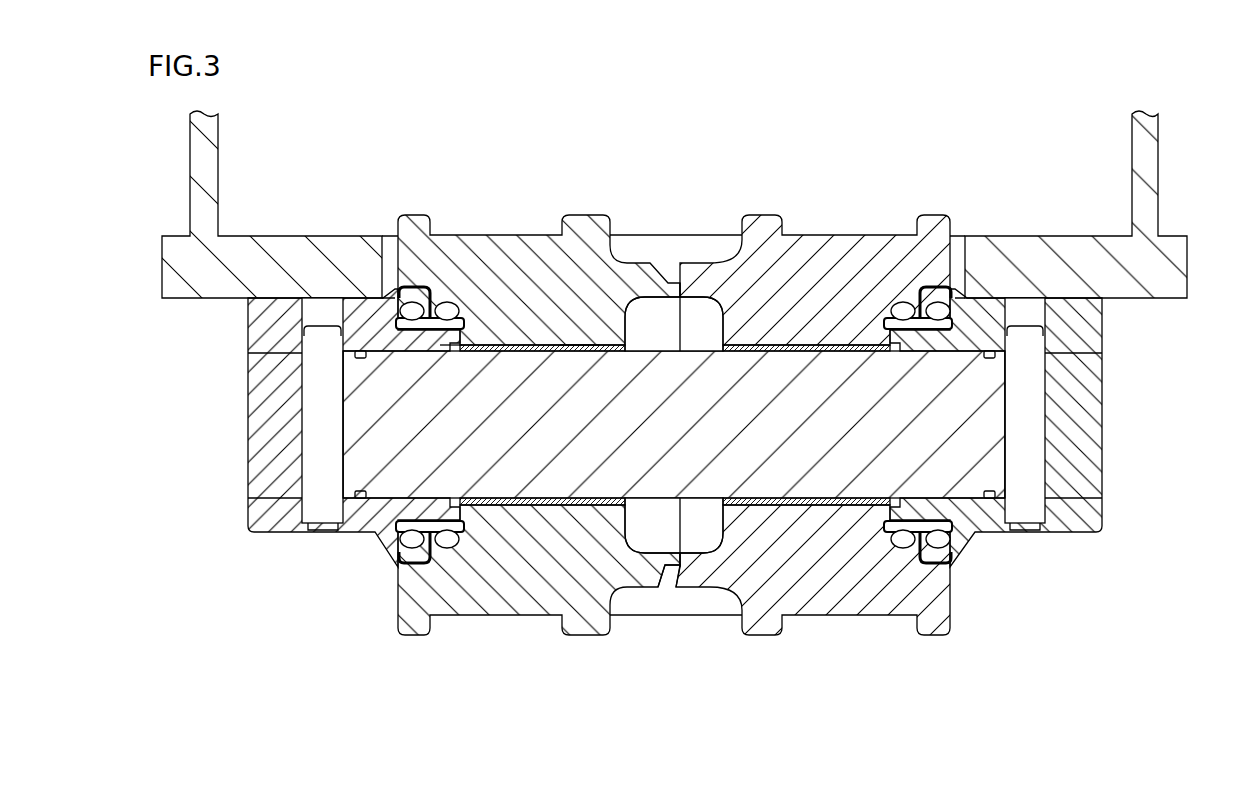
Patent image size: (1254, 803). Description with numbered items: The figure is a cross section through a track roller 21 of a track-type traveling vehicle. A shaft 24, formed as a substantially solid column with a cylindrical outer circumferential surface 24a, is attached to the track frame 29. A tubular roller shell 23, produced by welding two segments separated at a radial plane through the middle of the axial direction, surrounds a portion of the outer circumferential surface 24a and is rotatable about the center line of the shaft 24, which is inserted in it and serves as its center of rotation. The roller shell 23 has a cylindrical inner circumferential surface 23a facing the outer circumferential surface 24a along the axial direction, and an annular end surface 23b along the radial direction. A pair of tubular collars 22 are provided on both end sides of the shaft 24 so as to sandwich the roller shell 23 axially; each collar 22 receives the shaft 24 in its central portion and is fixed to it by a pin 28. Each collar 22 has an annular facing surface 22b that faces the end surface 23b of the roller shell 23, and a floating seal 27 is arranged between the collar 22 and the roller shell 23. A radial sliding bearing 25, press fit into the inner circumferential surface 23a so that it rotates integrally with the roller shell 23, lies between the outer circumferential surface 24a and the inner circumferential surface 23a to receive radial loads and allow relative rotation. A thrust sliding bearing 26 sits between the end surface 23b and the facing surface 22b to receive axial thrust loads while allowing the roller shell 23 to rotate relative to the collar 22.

The track roller 21 is at (684, 425).
The collar 22 is at (365, 518).
The facing surface 22b is at (452, 347).
The roller shell 23 is at (523, 262).
The inner circumferential surface 23a is at (577, 352).
The end surface 23b is at (455, 348).
The shaft 24 is at (962, 403).
The outer circumferential surface 24a is at (652, 567).
The radial sliding bearing 25 is at (538, 345).
The thrust sliding bearing 26 is at (424, 312).
The floating seal 27 is at (414, 290).
The pin 28 is at (318, 458).
The track frame 29 is at (1160, 266).